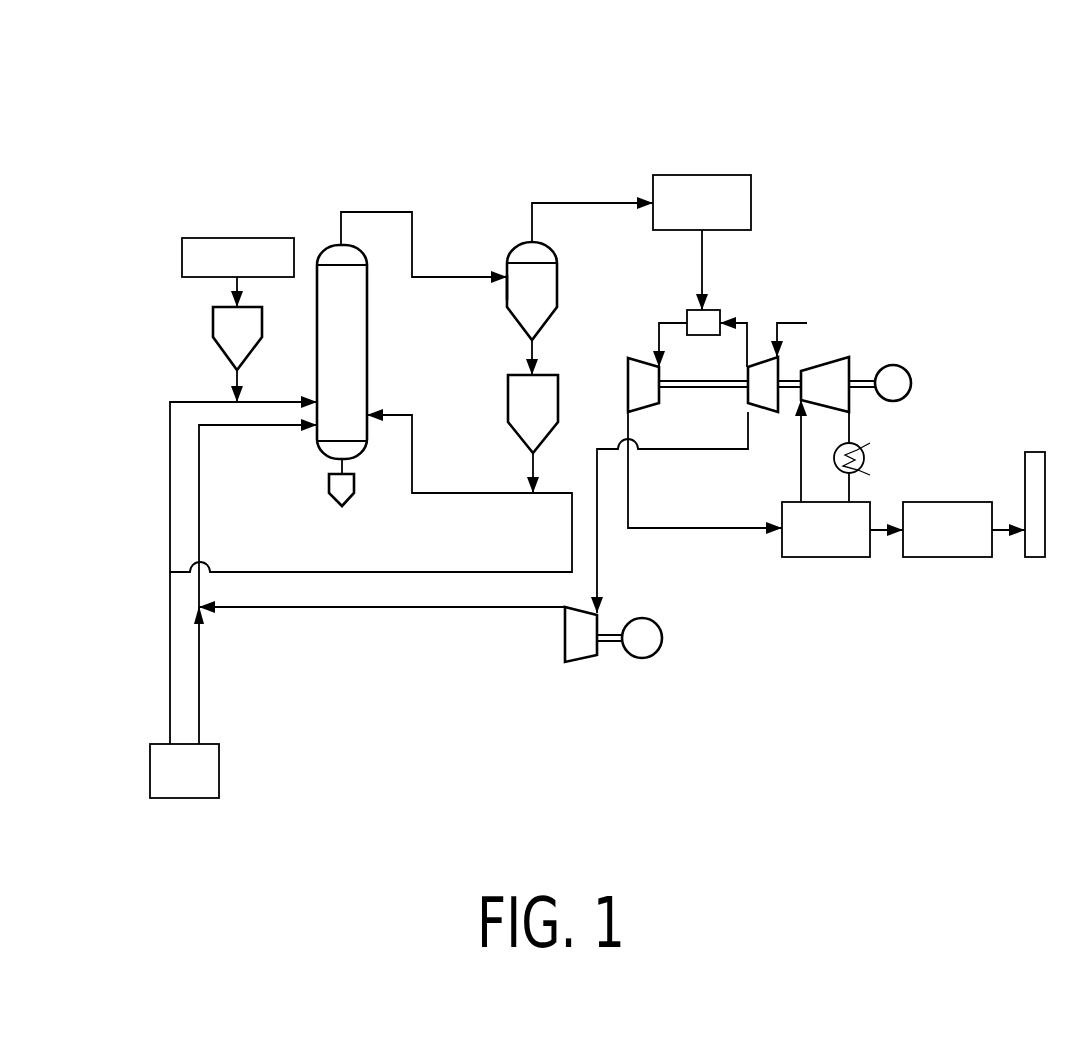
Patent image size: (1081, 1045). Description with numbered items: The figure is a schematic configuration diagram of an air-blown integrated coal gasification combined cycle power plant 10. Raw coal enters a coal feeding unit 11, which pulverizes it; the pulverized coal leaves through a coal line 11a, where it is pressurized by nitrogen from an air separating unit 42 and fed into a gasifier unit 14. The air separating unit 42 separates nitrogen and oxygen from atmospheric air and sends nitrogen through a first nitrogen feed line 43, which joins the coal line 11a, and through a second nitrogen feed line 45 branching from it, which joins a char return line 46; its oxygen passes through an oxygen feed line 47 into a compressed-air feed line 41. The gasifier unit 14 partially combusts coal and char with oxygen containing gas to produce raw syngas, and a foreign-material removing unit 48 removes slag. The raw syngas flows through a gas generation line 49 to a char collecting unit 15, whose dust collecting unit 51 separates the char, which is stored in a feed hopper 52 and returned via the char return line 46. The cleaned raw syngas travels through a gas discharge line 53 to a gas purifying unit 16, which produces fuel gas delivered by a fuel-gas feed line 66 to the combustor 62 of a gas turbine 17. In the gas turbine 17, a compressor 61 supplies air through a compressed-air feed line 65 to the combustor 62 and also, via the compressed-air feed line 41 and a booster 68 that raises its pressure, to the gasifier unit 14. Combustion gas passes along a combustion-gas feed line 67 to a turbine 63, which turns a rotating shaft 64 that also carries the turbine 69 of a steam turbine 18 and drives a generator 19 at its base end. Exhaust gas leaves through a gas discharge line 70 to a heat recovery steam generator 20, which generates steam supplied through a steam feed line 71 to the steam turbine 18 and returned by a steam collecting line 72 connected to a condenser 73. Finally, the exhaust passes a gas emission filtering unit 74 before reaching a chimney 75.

The IGCC power plant 10 is at (491, 110).
The coal feeding unit 11 is at (213, 318).
The coal line 11a is at (237, 372).
The gasifier unit 14 is at (316, 238).
The char collecting unit 15 is at (517, 242).
The gas purifying unit 16 is at (702, 175).
The gas turbine 17 is at (643, 327).
The steam turbine 18 is at (805, 352).
The generator 19 is at (907, 364).
The heat recovery steam generator 20 is at (841, 558).
The compressed-air feed line 41 is at (597, 560).
The air separating unit 42 is at (150, 770).
The first nitrogen feed line 43 is at (170, 655).
The second nitrogen feed line 45 is at (250, 571).
The char return line 46 is at (532, 462).
The oxygen feed line 47 is at (199, 655).
The foreign-material removing unit 48 is at (329, 482).
The gas generation line 49 is at (373, 212).
The dust collecting unit 51 is at (507, 290).
The feed hopper 52 is at (508, 398).
The gas discharge line 53 is at (568, 203).
The compressor 61 is at (760, 412).
The combustor 62 is at (714, 310).
The turbine 63 is at (628, 365).
The rotating shaft 64 is at (703, 390).
The compressed-air feed line 65 is at (748, 340).
The fuel-gas feed line 66 is at (702, 247).
The combustion-gas feed line 67 is at (668, 322).
The booster 68 is at (580, 662).
The turbine 69 is at (835, 357).
The gas discharge line 70 is at (703, 530).
The steam feed line 71 is at (802, 486).
The steam collecting line 72 is at (850, 488).
The condenser 73 is at (867, 444).
The gas emission filtering unit 74 is at (945, 502).
The chimney 75 is at (1032, 452).